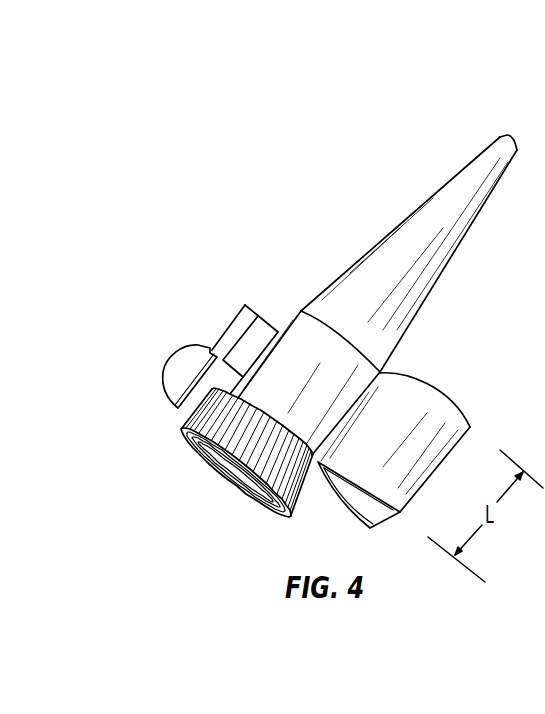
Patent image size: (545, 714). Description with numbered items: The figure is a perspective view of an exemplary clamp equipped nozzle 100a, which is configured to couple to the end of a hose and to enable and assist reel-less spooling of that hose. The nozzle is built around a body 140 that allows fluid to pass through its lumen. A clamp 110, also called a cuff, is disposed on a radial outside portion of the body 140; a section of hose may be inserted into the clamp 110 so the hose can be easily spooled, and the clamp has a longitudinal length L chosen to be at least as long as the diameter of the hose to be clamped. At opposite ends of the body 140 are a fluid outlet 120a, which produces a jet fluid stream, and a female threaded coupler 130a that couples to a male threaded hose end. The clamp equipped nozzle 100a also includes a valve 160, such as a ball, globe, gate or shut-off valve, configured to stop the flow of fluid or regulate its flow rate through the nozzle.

The clamp equipped nozzle 100a is at (343, 288).
The clamp 110 is at (415, 407).
The fluid outlet 120a is at (490, 145).
The female threaded coupler 130a is at (182, 427).
The body 140 is at (288, 314).
The valve 160 is at (189, 353).